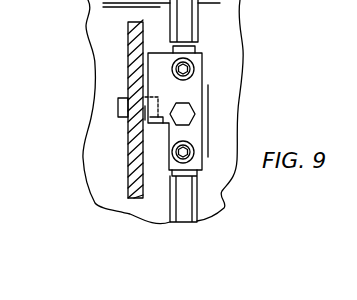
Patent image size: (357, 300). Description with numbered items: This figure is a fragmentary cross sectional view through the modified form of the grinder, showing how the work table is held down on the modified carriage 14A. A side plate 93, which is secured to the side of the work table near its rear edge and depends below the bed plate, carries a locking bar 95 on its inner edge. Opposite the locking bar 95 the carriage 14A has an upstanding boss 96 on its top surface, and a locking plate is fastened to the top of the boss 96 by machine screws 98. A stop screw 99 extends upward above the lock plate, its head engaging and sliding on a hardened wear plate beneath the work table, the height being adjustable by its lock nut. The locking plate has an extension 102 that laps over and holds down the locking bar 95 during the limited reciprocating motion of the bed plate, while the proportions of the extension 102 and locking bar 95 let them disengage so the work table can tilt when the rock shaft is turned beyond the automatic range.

The side plate 93 is at (128, 50).
The modified carriage 14A is at (232, 35).
The machine screw 98 is at (194, 72).
The stop screw 99 is at (190, 114).
The upstanding boss 96 is at (228, 204).
The extension 102 is at (152, 107).
The locking bar 95 is at (146, 112).